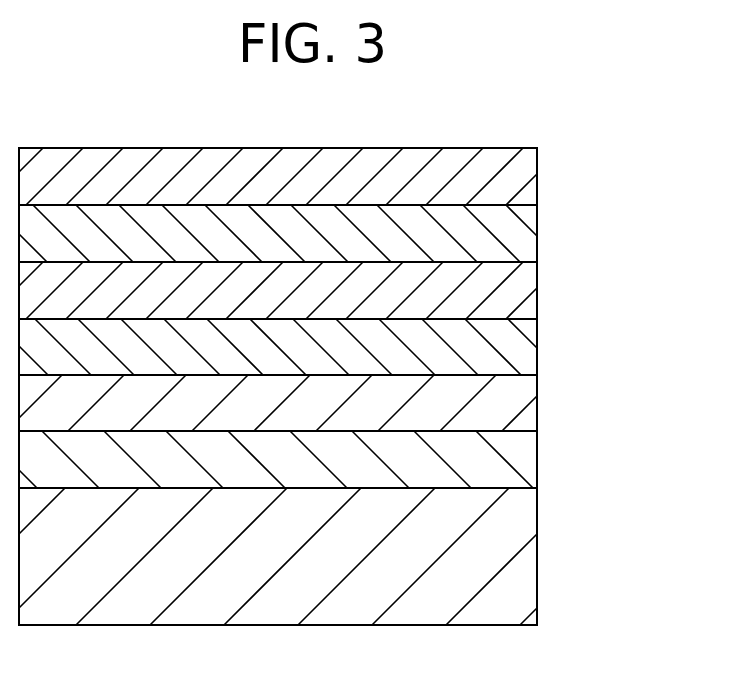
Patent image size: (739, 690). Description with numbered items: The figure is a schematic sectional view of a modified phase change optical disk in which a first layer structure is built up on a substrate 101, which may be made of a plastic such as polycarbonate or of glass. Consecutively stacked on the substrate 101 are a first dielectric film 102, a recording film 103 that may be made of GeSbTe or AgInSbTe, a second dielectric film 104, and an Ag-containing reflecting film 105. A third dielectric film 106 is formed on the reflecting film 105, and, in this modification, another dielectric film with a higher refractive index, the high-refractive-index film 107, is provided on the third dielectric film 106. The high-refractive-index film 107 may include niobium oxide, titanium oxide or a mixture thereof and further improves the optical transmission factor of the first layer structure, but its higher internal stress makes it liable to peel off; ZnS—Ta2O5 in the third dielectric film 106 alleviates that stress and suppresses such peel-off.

The substrate 101 is at (537, 553).
The first dielectric film 102 is at (537, 465).
The recording film 103 is at (537, 413).
The second dielectric film 104 is at (537, 348).
The reflecting film 105 is at (537, 293).
The third dielectric film 106 is at (537, 237).
The high-refractive-index film 107 is at (537, 180).